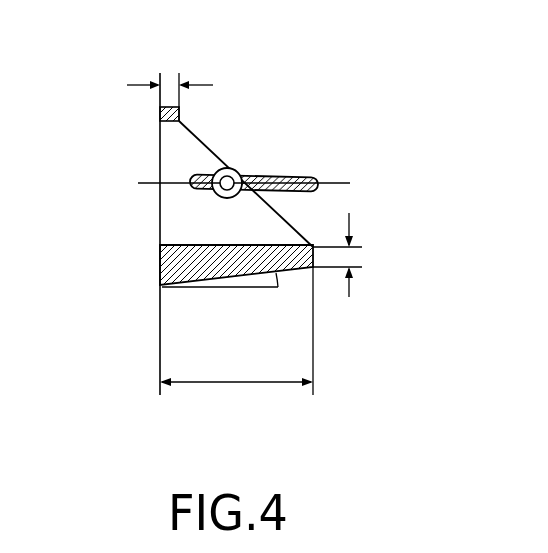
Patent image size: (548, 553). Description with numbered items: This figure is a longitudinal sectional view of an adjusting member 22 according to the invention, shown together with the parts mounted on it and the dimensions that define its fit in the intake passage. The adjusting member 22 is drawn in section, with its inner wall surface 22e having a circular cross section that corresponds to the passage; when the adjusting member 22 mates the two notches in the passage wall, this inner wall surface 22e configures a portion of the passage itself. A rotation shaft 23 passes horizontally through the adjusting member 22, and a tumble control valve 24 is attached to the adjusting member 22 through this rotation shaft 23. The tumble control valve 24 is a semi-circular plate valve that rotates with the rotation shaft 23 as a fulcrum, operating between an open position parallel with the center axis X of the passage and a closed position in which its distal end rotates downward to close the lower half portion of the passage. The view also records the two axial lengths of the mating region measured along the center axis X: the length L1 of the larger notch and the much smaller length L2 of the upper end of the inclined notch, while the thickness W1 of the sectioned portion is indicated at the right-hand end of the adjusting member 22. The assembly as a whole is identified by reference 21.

The valve assembly 21 is at (300, 112).
The adjusting member 22 is at (152, 236).
The inner wall surface 22e is at (262, 246).
The rotation shaft 23 is at (229, 168).
The tumble control valve 24 is at (292, 178).
The center axis X is at (150, 183).
The length of the notch L1 is at (236, 370).
The length of upper end of the notch L2 is at (170, 68).
The thickness W1 is at (360, 256).